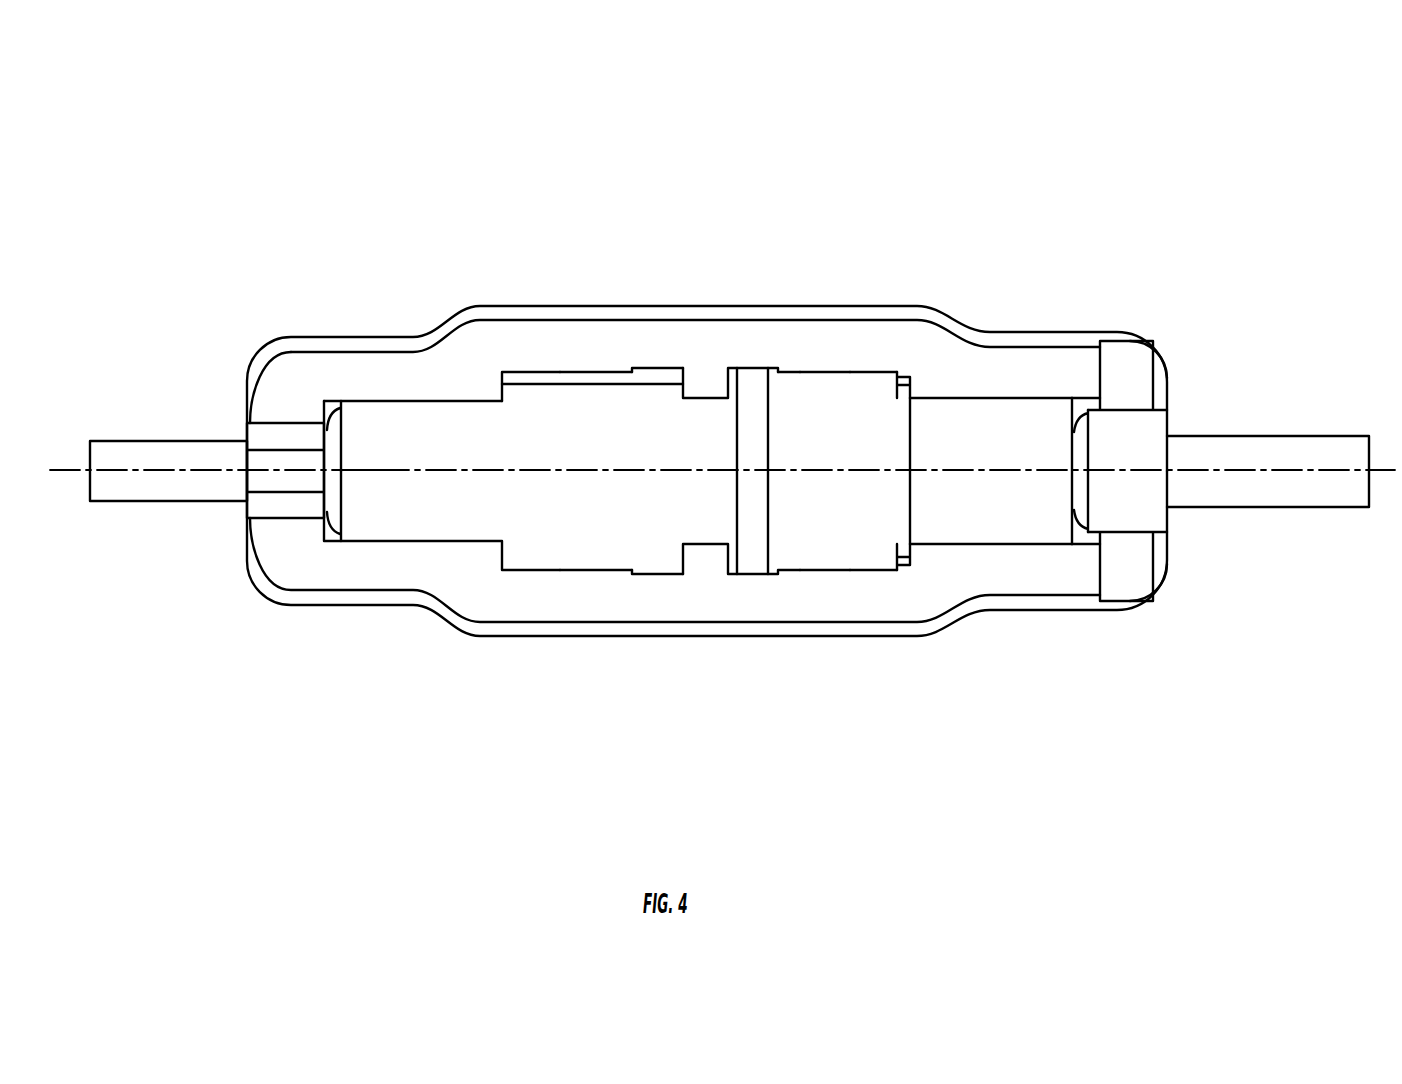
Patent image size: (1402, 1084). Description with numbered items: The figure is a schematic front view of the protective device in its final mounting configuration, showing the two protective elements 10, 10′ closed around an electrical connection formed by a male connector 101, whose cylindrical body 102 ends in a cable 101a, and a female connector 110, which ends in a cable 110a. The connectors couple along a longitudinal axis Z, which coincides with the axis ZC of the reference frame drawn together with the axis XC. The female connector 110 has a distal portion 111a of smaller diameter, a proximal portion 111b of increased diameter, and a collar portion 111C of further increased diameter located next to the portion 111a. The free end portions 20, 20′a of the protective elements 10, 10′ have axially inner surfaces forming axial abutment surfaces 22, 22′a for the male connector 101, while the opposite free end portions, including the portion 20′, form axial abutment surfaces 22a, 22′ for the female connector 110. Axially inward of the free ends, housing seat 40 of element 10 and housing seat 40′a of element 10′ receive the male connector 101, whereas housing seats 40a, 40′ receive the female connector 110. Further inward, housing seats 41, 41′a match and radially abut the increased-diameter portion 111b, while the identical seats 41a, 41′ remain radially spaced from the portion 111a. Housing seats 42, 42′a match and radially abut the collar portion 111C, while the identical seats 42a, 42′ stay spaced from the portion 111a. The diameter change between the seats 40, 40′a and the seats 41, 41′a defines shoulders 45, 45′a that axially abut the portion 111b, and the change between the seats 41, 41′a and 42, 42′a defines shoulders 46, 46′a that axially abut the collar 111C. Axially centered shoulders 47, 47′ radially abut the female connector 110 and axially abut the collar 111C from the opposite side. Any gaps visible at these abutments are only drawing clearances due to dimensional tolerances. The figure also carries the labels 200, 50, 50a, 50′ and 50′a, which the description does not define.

The protective element 10 is at (708, 278).
The protective element 10′ is at (717, 662).
The free end portion 20 is at (1145, 315).
The free end portion 20′ is at (258, 625).
The free end portion 20′a is at (1148, 630).
The housing shell 200 is at (265, 313).
The axial abutment surface 22 is at (1078, 397).
The axial abutment surface 22a is at (338, 415).
The axial abutment surface 22′ is at (335, 527).
The axial abutment surface 22′a is at (1078, 547).
The housing seat 40 is at (1018, 400).
The housing seat 40a is at (378, 415).
The housing seat 40′ is at (400, 527).
The housing seat 40′a is at (1017, 540).
The further housing seat 41 is at (867, 375).
The further housing seat 41a is at (585, 390).
The further housing seat 41′ is at (587, 563).
The further housing seat 41′a is at (855, 570).
The housing seat 42 is at (757, 375).
The seat 42a is at (658, 378).
The further housing seat 42′ is at (662, 567).
The further housing seat 42′a is at (760, 577).
The shoulder 45 is at (897, 372).
The shoulder 45′a is at (897, 570).
The shoulder 46 is at (780, 388).
The shoulder 46′a is at (777, 573).
The shoulder 47 is at (713, 402).
The shoulder 47′ is at (698, 527).
The end cap 50 is at (1172, 412).
The end cap 50a is at (232, 408).
The end cap 50′ is at (237, 525).
The end cap 50′a is at (1173, 512).
The male connector 101 is at (975, 397).
The cable 101a is at (1287, 455).
The cylindrical body 102 is at (1009, 449).
The female connector 110 is at (538, 383).
The cable 110a is at (147, 460).
The portion of cylindrical body 111a is at (592, 410).
The portion of increased diameter 111b is at (852, 449).
The portion of further increased diameter 111C is at (747, 412).
The longitudinal axis Z is at (1387, 475).
The reference axis XC is at (355, 436).
The reference axis ZC is at (376, 486).